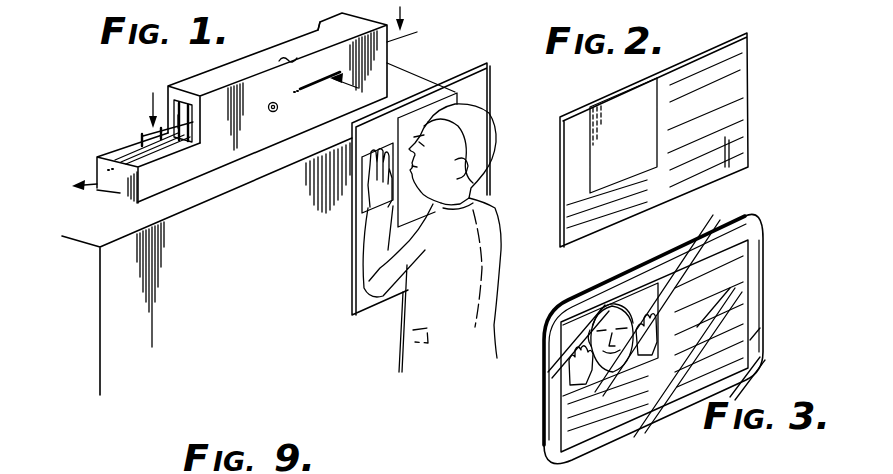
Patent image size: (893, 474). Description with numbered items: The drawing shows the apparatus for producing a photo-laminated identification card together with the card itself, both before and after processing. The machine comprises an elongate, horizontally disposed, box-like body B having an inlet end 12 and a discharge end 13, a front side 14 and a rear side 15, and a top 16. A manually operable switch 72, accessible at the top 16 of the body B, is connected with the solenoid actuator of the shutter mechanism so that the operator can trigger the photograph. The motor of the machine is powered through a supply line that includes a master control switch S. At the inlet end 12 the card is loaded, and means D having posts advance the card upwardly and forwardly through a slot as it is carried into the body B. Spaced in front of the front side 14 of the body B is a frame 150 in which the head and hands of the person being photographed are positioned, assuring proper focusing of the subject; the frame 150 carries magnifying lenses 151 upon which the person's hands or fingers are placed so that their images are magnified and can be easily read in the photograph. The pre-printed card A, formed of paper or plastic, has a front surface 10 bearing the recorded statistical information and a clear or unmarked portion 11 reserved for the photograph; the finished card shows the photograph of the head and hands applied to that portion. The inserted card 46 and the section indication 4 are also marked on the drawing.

In FIG. 2, the front surface 10 is at (756, 88).
In FIG. 3, the front surface 10 is at (769, 272).
In FIG. 2, the clear or unmarked portion 11 is at (590, 118).
In FIG. 3, the clear or unmarked portion 11 is at (633, 297).
In FIG. 1, the inlet end 12 is at (104, 165).
In FIG. 1, the discharge end 13 is at (389, 63).
In FIG. 1, the front side 14 is at (273, 132).
In FIG. 1, the rear side 15 is at (298, 37).
In FIG. 1, the top 16 is at (214, 75).
In FIG. 1, the inserted identification card 46 is at (193, 133).
In FIG. 1, the manually operable switch 72 is at (326, 78).
In FIG. 1, the frame 150 is at (358, 273).
In FIG. 1, the magnifying lenses 151 is at (364, 192).
In FIG. 1, the section line 4- 4 is at (277, 71).
In FIG. 2, the pre-printed card A is at (770, 153).
In FIG. 3, the pre-printed card A is at (780, 366).
In FIG. 1, the box-like body B is at (181, 173).
In FIG. 1, the means D is at (148, 149).
In FIG. 1, the master control switch S is at (272, 52).